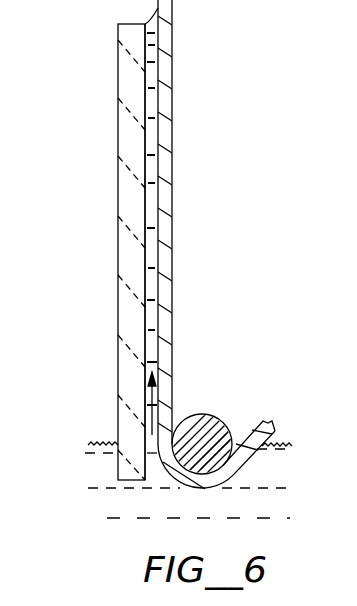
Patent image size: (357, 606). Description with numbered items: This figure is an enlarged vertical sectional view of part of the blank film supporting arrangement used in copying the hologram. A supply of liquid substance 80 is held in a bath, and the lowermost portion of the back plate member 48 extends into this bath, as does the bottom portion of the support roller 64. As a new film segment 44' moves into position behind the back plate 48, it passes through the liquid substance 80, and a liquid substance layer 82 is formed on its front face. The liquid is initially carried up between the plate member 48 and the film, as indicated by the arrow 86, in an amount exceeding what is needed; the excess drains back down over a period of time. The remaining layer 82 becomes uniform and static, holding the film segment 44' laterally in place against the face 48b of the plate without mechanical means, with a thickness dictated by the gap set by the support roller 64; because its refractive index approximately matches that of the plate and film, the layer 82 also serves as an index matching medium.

The film segment 44' is at (216, 244).
The back plate member 48 is at (130, 182).
The inner face of plate 48b is at (148, 255).
The liquid substance layer 82 is at (152, 208).
The arrow 86 is at (150, 400).
The support roller 64 is at (212, 412).
The liquid substance 80 is at (108, 470).